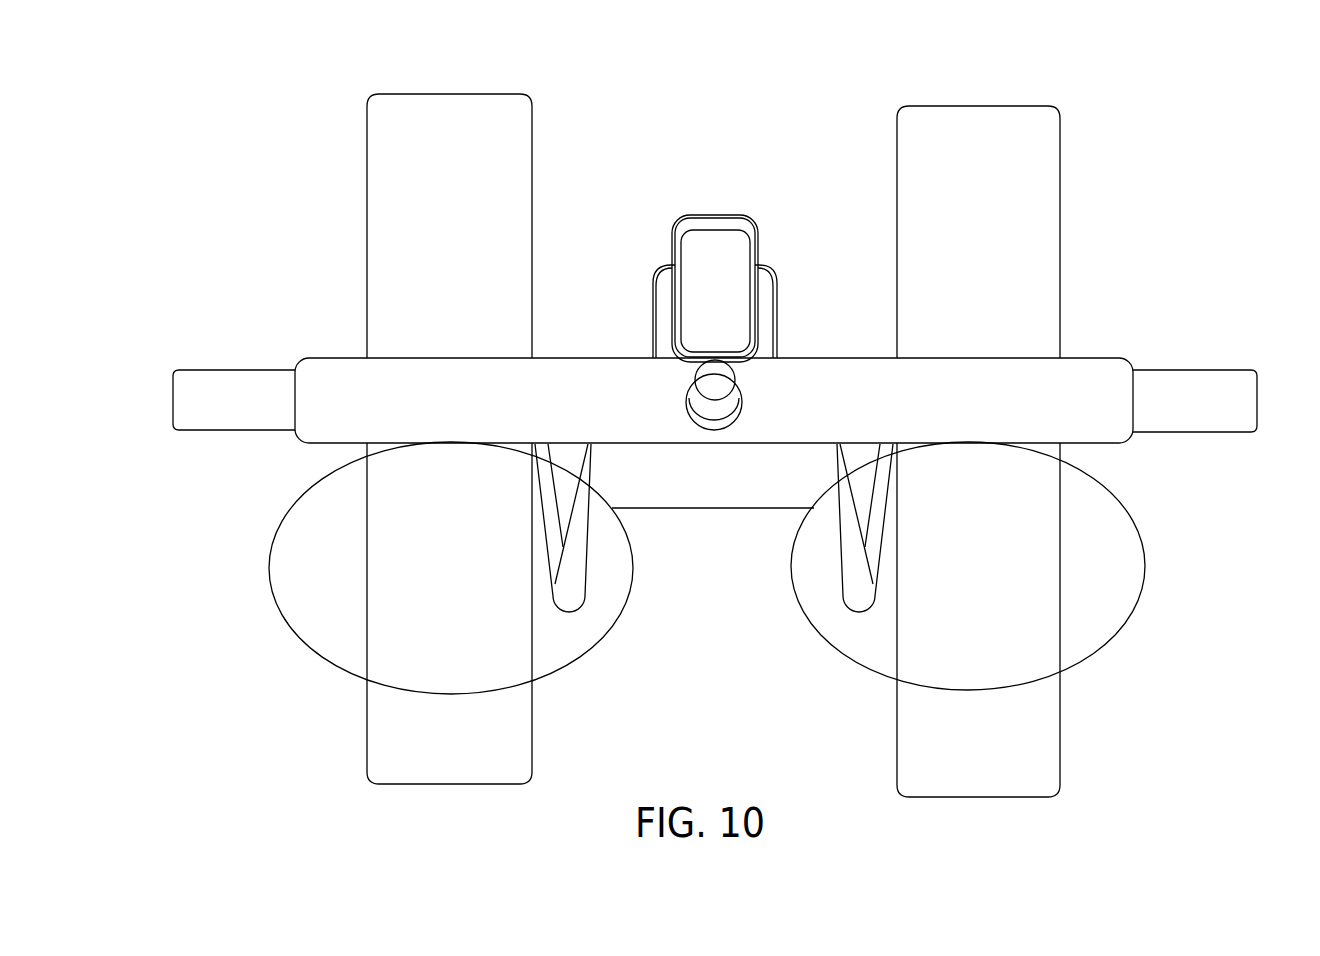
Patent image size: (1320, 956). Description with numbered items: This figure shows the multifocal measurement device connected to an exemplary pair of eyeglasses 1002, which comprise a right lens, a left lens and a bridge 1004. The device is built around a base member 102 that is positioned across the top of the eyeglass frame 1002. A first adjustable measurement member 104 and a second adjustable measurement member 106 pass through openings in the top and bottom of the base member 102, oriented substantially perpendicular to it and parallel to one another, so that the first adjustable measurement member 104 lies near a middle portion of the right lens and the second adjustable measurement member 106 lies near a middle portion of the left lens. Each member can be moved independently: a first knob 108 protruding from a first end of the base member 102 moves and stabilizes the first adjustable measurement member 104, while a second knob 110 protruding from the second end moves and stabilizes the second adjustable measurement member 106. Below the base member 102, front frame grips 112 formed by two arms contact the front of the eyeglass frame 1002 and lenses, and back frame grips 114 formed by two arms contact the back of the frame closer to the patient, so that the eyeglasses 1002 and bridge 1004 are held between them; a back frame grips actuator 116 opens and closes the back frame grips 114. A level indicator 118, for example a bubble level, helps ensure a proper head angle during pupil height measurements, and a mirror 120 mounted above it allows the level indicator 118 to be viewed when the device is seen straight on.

The base member 102 is at (345, 363).
The first adjustable measurement member 104 is at (380, 122).
The second adjustable measurement member 106 is at (1050, 122).
The first knob 108 is at (183, 393).
The second knob 110 is at (1212, 382).
The front frame grips 112 is at (828, 462).
The back frame grips 114 is at (875, 528).
The back frame grips actuator 116 is at (660, 322).
The level indicator 118 is at (715, 376).
The mirror 120 is at (733, 238).
The eyeglasses 1002 is at (340, 672).
The bridge 1004 is at (712, 509).